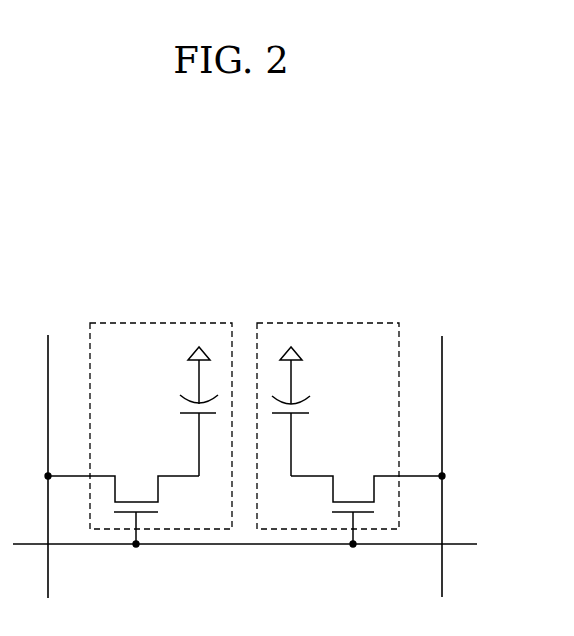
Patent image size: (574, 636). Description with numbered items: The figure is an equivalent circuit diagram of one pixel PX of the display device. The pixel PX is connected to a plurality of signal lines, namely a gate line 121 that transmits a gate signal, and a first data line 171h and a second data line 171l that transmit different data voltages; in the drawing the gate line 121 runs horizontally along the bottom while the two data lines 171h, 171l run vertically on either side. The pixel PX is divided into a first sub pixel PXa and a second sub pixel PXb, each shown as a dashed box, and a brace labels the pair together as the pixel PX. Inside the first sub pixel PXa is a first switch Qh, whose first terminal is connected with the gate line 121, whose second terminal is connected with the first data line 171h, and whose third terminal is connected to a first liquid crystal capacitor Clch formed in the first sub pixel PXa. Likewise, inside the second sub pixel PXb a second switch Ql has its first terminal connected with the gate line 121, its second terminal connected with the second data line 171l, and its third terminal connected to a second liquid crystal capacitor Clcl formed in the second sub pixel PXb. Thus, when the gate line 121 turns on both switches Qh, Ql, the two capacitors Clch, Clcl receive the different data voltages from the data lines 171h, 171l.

The pixel PX is at (153, 248).
The first sub pixel PXa is at (160, 322).
The second sub pixel PXb is at (322, 322).
The first data line 171h is at (50, 455).
The second data line 171l is at (442, 455).
The gate line 121 is at (262, 546).
The first liquid crystal capacitor Clch is at (179, 411).
The second liquid crystal capacitor Clcl is at (308, 411).
The first switch Qh is at (123, 501).
The second switch Ql is at (366, 501).